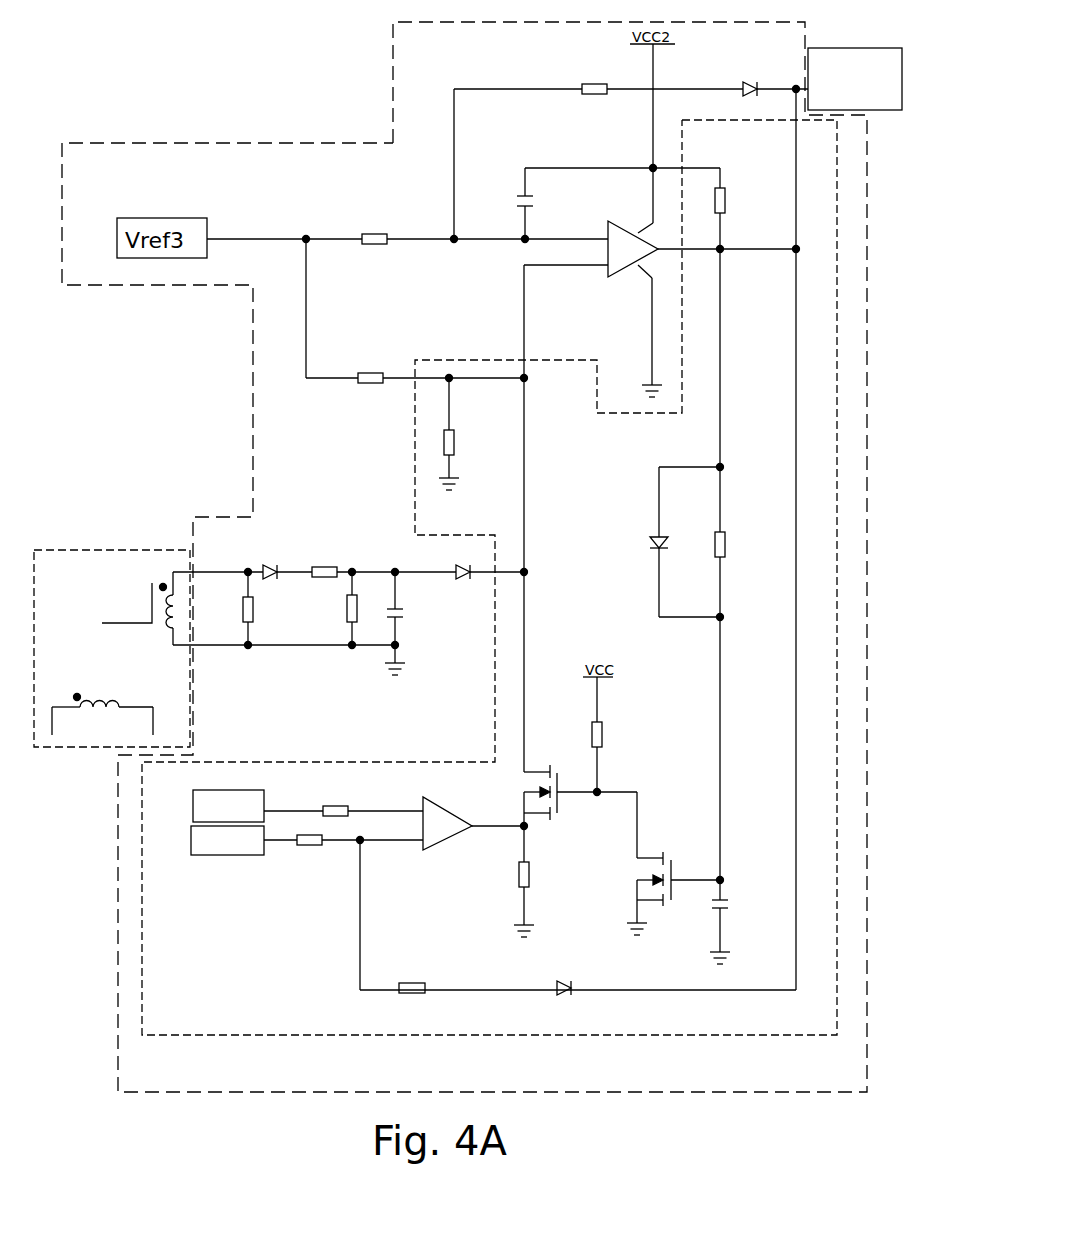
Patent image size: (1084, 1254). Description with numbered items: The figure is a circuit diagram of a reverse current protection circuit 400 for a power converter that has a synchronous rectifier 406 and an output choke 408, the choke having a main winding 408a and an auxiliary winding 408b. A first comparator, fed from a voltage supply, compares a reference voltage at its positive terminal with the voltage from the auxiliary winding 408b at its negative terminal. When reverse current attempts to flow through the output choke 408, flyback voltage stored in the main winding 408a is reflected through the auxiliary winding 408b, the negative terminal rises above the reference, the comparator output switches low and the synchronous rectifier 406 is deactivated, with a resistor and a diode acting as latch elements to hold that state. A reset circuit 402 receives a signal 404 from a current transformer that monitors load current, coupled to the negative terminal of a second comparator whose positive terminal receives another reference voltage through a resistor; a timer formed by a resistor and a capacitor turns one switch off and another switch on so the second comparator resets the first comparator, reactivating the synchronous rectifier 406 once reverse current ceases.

The reverse current protection circuit 400 is at (333, 143).
The reset circuit 402 is at (765, 1035).
The signal 404 is at (228, 858).
The synchronous rectifier 406 is at (885, 48).
The output choke 408 is at (71, 550).
The main winding 408a is at (104, 700).
The auxiliary winding 408b is at (165, 625).